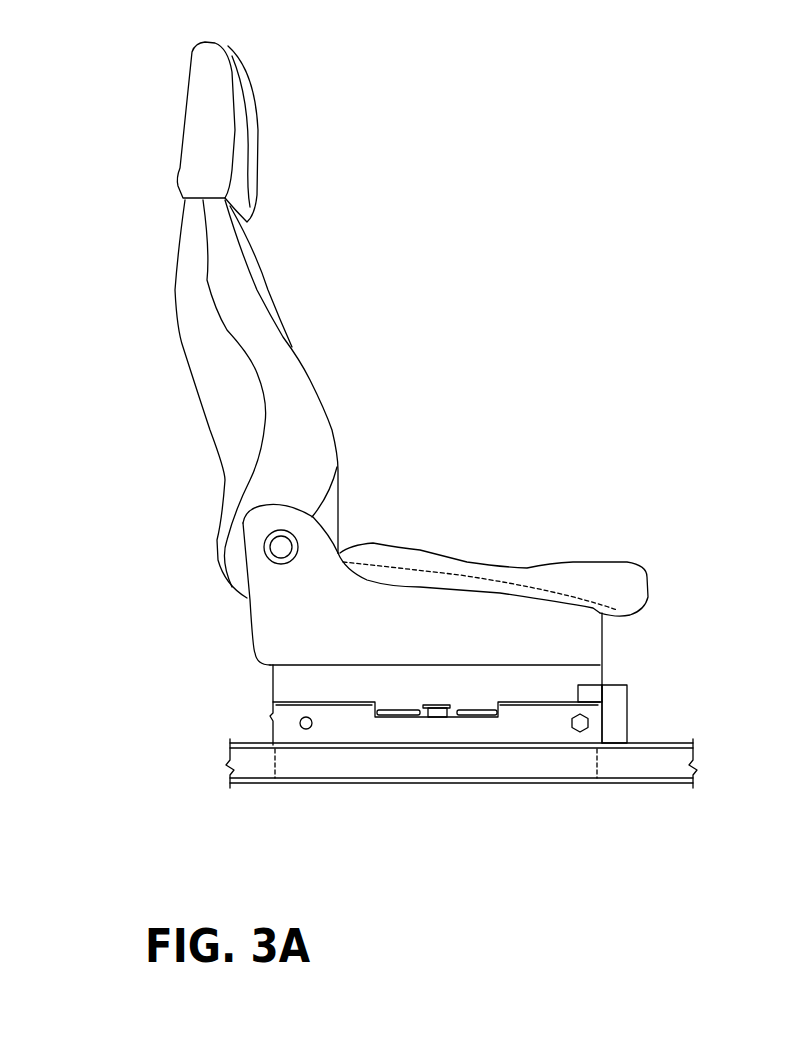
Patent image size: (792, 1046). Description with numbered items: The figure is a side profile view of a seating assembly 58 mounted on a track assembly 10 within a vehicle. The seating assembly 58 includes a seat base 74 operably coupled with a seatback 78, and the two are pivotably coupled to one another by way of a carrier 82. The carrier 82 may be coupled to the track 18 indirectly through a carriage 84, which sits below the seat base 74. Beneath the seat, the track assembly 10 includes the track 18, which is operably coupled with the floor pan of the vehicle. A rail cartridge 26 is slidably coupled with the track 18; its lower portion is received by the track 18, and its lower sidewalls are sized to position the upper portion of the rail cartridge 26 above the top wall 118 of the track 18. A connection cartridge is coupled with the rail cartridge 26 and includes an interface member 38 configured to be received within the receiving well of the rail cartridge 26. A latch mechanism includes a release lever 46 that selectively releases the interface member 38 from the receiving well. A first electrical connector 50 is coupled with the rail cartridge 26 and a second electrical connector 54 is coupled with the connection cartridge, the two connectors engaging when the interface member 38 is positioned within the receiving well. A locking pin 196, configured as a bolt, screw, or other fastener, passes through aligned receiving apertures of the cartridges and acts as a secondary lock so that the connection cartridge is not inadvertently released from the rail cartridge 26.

The track assembly 10 is at (492, 733).
The track 18 is at (650, 767).
The rail cartridge 26 is at (483, 757).
The interface member 38 is at (307, 730).
The release lever 46 is at (435, 717).
The first electrical connector 50 is at (617, 705).
The second electrical connector 54 is at (593, 687).
The seating assembly 58 is at (396, 367).
The seat base 74 is at (528, 568).
The seatback 78 is at (222, 378).
The carrier 82 is at (285, 620).
The carriage 84 is at (320, 677).
The top wall 118 is at (667, 743).
The locking pin 196 is at (578, 732).